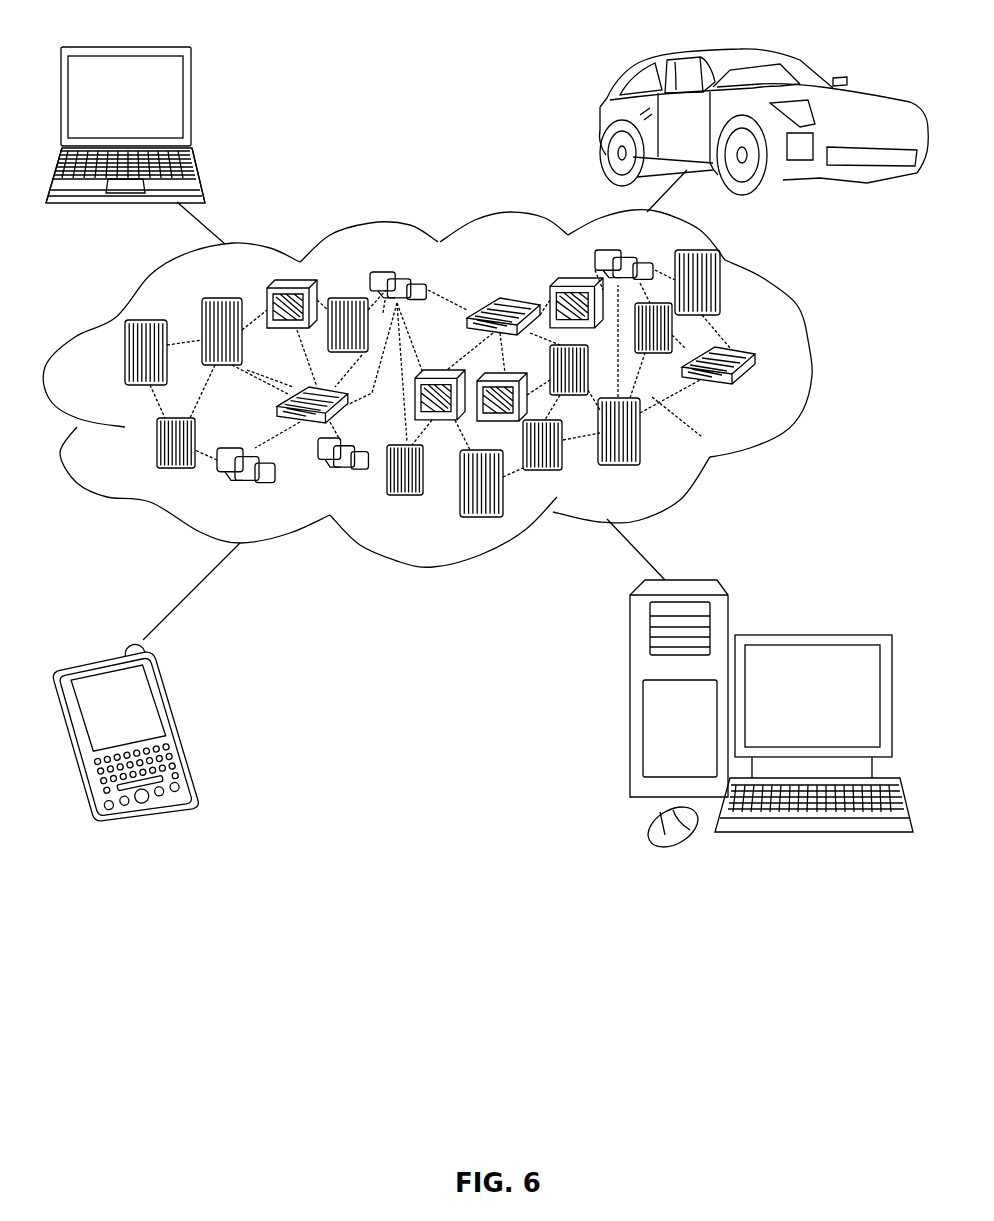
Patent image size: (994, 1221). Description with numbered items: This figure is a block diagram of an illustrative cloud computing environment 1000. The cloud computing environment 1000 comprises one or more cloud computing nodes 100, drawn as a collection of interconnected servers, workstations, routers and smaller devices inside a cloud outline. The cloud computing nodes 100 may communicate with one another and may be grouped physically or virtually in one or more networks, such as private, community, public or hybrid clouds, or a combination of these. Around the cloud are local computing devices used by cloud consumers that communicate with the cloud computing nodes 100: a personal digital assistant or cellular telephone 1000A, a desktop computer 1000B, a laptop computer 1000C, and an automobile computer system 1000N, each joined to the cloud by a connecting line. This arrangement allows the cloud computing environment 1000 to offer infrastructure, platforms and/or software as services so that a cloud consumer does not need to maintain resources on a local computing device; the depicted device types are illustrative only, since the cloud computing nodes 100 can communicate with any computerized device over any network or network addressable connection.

The laptop computer 1000C is at (190, 105).
The automobile computer system 1000N is at (603, 120).
The cloud computing environment 1000 is at (812, 363).
The cloud computing nodes 100 is at (755, 392).
The personal digital assistant (PDA) or cellular telephone 1000A is at (180, 720).
The desktop computer 1000B is at (808, 633).